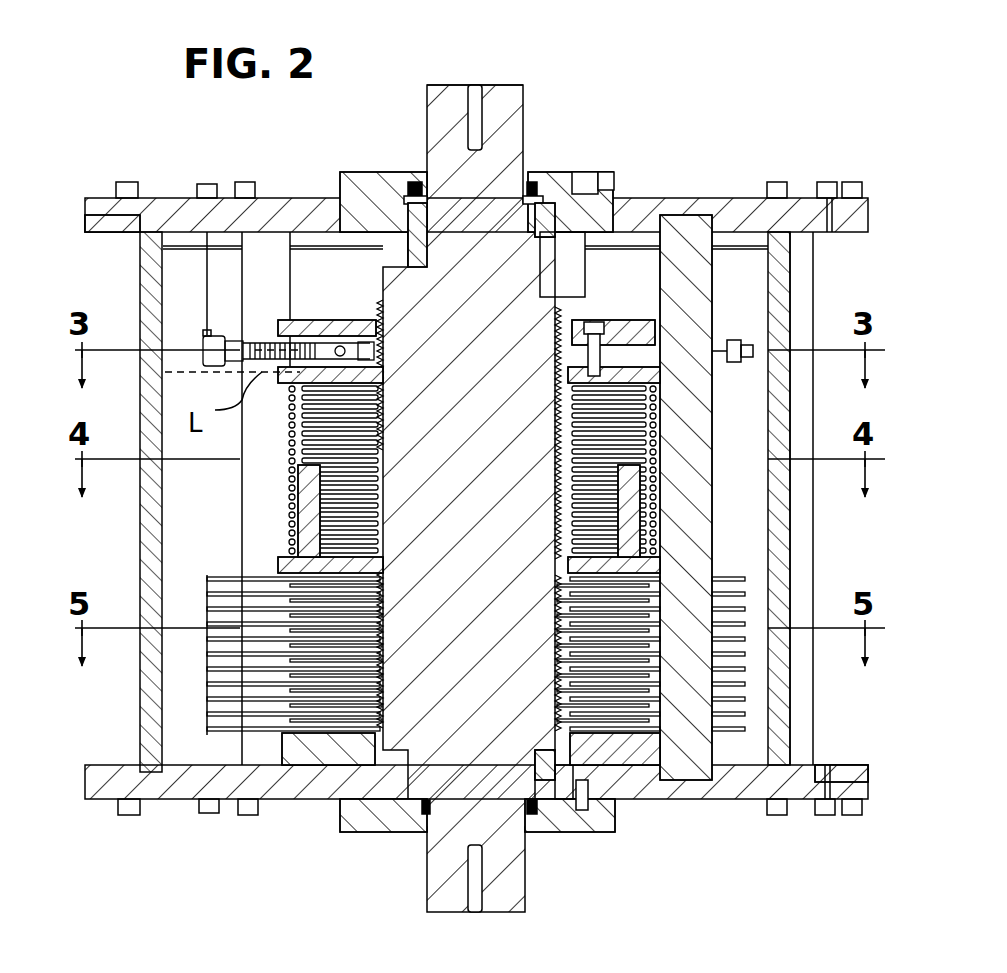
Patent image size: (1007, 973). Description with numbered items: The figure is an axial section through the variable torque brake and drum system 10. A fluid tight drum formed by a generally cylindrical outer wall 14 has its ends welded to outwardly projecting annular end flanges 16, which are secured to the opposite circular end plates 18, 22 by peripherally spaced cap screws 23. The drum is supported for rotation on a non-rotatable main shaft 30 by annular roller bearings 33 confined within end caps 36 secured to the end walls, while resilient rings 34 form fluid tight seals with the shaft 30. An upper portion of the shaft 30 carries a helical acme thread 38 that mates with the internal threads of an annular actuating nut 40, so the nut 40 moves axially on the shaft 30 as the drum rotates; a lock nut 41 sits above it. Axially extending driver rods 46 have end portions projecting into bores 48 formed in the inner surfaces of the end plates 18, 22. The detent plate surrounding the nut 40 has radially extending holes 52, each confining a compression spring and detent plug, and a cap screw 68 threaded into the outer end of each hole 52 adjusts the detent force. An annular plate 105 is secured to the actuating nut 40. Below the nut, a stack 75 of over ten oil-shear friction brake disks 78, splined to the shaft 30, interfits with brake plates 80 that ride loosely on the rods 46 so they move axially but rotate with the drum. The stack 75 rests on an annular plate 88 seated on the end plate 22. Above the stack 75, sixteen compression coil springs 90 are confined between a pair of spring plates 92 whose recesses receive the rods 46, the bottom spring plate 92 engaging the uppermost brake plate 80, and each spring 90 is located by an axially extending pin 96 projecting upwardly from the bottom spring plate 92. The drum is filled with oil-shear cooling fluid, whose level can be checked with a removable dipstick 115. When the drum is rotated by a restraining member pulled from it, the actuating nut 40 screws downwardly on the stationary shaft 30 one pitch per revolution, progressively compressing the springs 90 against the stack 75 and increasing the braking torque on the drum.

The variable torque brake and drum system 10 is at (735, 140).
The cylindrical outer wall 14 is at (775, 558).
The annular end flanges 16 is at (98, 220).
The end plate 18 is at (272, 198).
The end plate 22 is at (182, 799).
The cap screws 23 is at (128, 182).
The main shaft 30 is at (462, 84).
The annular roller bearings 33 is at (542, 225).
The resilient rings 34 is at (418, 188).
The end caps 36 is at (562, 172).
The helical thread 38 is at (555, 415).
The actuating nut 40 is at (555, 345).
The lock nut 41 is at (362, 320).
The driver rods 46 is at (262, 488).
The bores 48 is at (685, 215).
The radial holes 52 is at (262, 343).
The cap screw 68 is at (740, 340).
The stack 75 is at (195, 672).
The friction brake disks 78 is at (385, 600).
The brake plates 80 is at (207, 607).
The annular plate 88 is at (325, 750).
The compression coil springs 90 is at (575, 490).
The spring plates 92 is at (270, 383).
The pin 96 is at (302, 514).
The annular plate 105 is at (612, 320).
The dipstick 115 is at (205, 270).